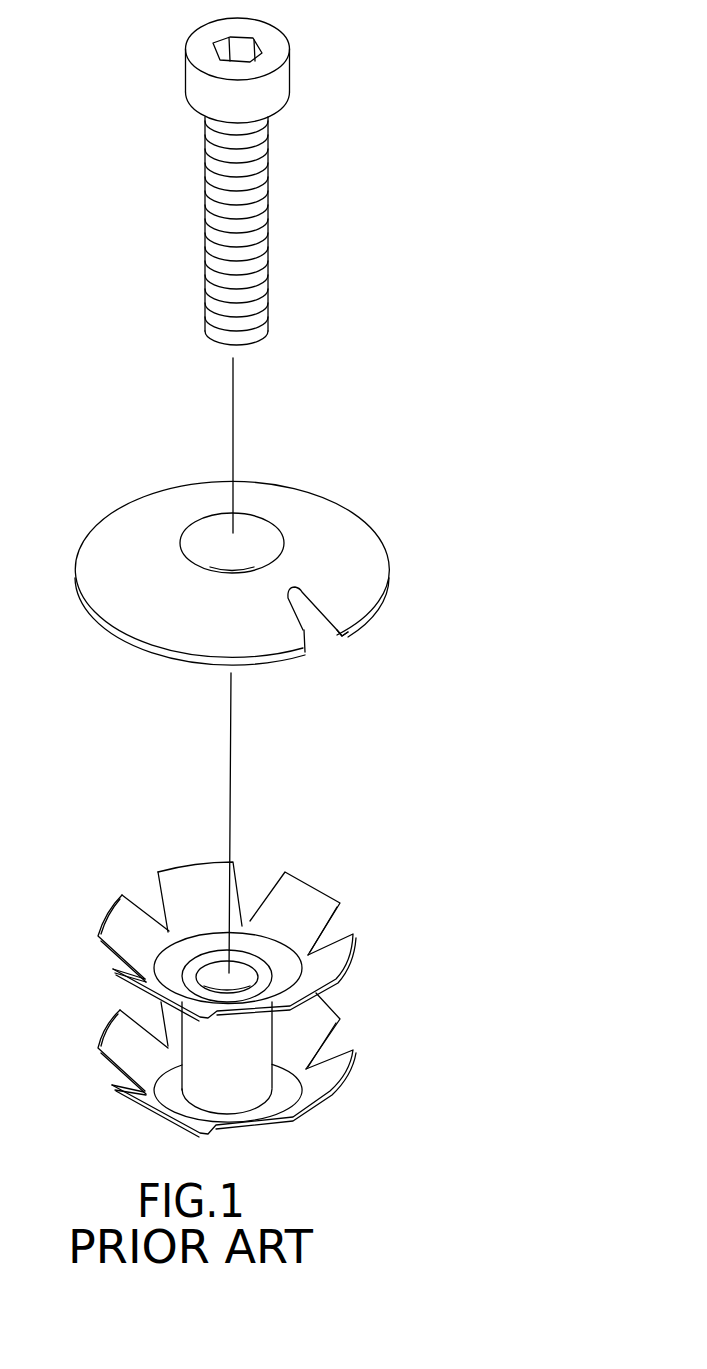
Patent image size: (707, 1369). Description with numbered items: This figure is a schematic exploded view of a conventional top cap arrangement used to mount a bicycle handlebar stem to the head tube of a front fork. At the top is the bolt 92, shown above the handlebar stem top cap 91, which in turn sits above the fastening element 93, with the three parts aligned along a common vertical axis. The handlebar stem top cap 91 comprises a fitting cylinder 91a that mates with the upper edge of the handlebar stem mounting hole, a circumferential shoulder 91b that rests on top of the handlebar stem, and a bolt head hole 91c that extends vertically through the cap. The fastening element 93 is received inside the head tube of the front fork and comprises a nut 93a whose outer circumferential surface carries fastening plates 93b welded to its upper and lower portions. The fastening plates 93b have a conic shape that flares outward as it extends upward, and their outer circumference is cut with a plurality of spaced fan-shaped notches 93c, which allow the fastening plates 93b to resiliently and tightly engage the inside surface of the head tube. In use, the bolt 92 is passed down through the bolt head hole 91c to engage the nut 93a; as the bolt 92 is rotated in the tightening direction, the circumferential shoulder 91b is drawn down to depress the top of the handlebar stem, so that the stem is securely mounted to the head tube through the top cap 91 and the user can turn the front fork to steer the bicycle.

The handlebar stem top cap 91 is at (259, 559).
The fitting cylinder 91a is at (328, 636).
The circumferential shoulder 91b is at (330, 634).
The bolt head hole 91c is at (212, 543).
The bolt 92 is at (310, 195).
The fastening element 93 is at (265, 968).
The nut 93a is at (242, 960).
The fastening plates 93b is at (312, 898).
The fan-shaped notches 93c is at (141, 890).